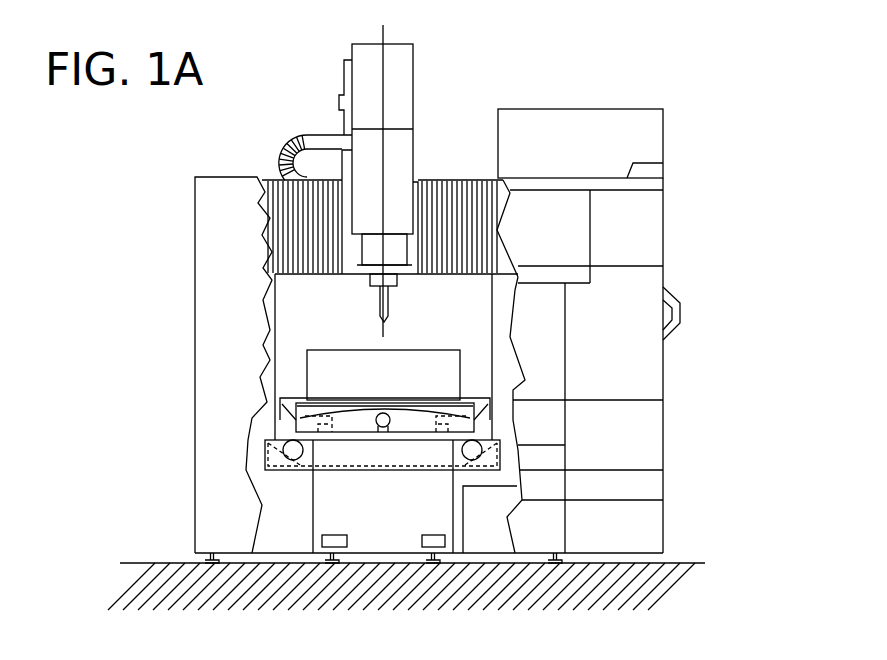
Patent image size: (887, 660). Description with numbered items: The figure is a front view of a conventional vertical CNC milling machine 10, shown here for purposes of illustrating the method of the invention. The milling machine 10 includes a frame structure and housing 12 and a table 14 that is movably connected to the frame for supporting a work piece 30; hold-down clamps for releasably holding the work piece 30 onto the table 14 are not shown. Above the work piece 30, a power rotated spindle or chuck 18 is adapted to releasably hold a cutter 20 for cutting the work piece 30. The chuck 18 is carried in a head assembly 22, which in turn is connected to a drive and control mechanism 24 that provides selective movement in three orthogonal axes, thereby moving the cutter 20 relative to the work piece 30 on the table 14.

The vertical CNC milling machine 10 is at (718, 220).
The frame structure and housing 12 is at (598, 108).
The table 14 is at (305, 422).
The spindle or chuck 18 is at (393, 278).
The cutter 20 is at (388, 318).
The head assembly 22 is at (365, 248).
The drive and control mechanism 24 is at (456, 180).
The work piece 30 is at (318, 378).